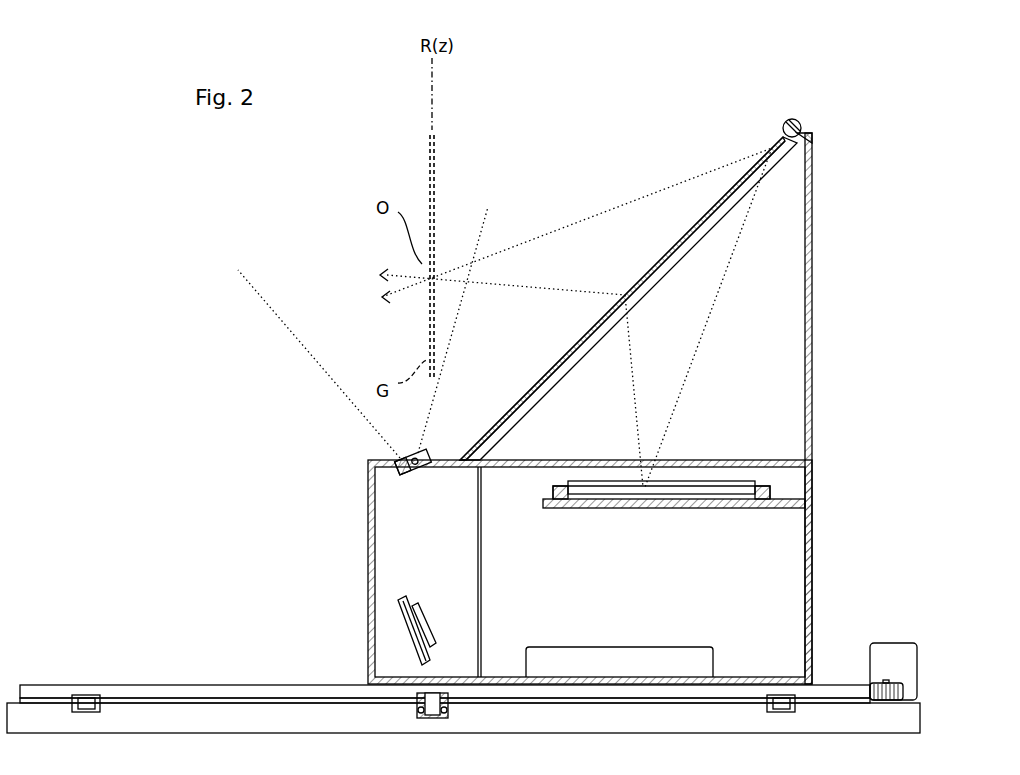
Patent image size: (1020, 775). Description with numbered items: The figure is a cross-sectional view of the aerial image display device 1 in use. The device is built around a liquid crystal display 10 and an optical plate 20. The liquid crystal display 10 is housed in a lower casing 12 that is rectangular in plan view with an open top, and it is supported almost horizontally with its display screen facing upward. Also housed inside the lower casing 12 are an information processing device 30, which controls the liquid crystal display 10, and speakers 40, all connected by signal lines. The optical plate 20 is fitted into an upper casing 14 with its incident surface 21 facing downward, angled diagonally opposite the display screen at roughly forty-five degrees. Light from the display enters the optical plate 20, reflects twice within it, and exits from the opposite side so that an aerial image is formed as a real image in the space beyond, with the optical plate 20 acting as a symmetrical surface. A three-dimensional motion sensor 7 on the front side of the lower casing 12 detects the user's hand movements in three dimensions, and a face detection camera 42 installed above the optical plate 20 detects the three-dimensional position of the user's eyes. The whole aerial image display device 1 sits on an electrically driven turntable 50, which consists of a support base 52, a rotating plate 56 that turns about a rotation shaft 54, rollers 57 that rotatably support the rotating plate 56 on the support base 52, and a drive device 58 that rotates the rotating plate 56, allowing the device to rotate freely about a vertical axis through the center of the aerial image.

The aerial image display device 1 is at (857, 200).
The 3D motion sensor 7 is at (420, 470).
The liquid crystal display 10 is at (612, 486).
The lower casing 12 is at (815, 547).
The upper casing 14 is at (813, 342).
The optical plate 20 is at (766, 152).
The incident surface 21 is at (705, 232).
The information processing device 30 is at (680, 660).
The speakers 40 is at (412, 607).
The face detection camera 42 is at (786, 120).
The turntable 50 is at (132, 662).
The support base 52 is at (242, 712).
The rotation shaft 54 is at (425, 714).
The rotating plate 56 is at (252, 696).
The rollers 57 is at (85, 708).
The drive device 58 is at (892, 638).